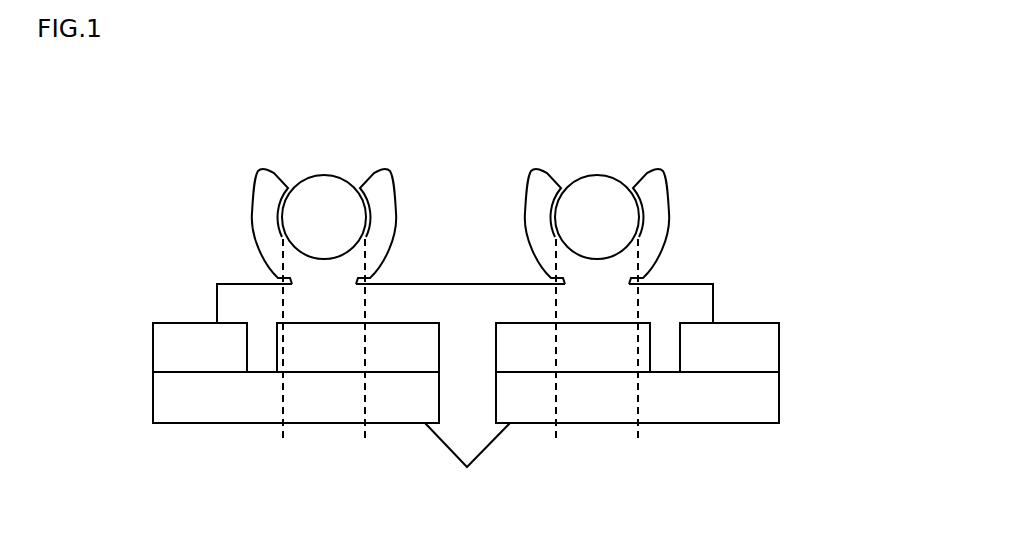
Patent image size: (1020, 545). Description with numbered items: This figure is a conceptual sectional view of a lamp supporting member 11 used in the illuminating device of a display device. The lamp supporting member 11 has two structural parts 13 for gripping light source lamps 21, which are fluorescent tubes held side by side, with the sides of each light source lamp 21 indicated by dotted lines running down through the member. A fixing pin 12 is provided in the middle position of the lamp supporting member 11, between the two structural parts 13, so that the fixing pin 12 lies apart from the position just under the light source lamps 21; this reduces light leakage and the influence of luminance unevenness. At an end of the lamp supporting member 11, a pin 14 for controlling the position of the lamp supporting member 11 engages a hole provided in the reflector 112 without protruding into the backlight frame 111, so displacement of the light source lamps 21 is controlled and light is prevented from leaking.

The lamp supporting member 11 is at (688, 308).
The fixing pin 12 is at (465, 445).
The structural part for gripping the light source lamp 13 is at (650, 203).
The pin for controlling a position of the lamp supporting member 14 is at (662, 358).
The light source lamp 21 is at (596, 213).
The backlight frame 111 is at (762, 400).
The reflector 112 is at (762, 343).